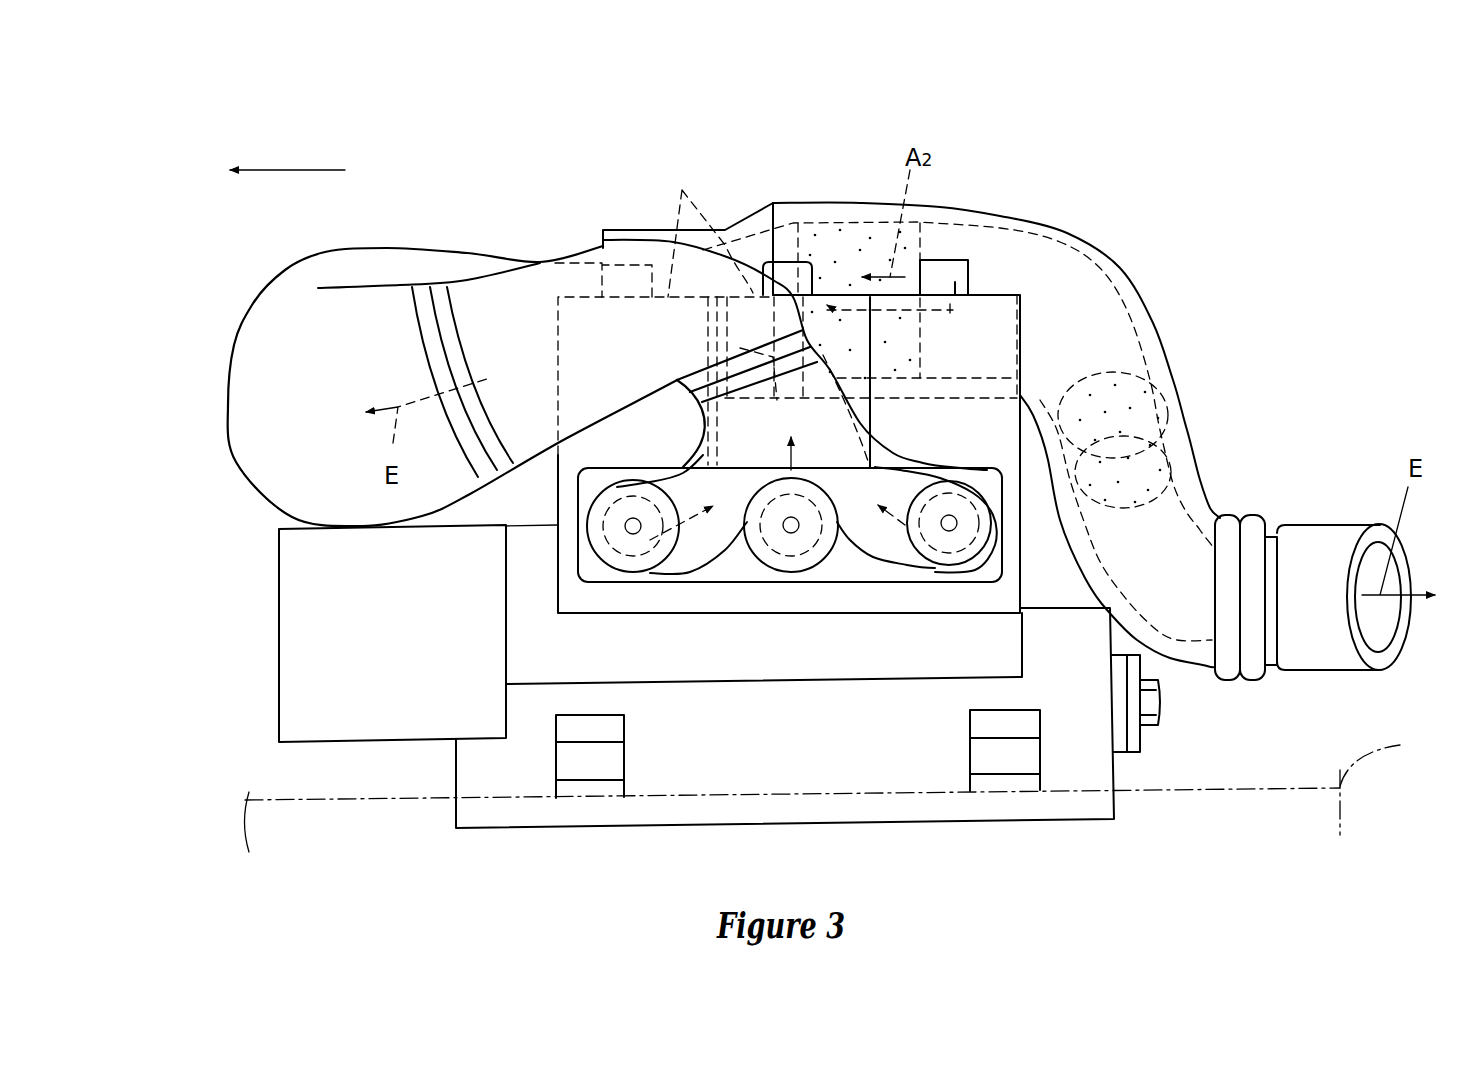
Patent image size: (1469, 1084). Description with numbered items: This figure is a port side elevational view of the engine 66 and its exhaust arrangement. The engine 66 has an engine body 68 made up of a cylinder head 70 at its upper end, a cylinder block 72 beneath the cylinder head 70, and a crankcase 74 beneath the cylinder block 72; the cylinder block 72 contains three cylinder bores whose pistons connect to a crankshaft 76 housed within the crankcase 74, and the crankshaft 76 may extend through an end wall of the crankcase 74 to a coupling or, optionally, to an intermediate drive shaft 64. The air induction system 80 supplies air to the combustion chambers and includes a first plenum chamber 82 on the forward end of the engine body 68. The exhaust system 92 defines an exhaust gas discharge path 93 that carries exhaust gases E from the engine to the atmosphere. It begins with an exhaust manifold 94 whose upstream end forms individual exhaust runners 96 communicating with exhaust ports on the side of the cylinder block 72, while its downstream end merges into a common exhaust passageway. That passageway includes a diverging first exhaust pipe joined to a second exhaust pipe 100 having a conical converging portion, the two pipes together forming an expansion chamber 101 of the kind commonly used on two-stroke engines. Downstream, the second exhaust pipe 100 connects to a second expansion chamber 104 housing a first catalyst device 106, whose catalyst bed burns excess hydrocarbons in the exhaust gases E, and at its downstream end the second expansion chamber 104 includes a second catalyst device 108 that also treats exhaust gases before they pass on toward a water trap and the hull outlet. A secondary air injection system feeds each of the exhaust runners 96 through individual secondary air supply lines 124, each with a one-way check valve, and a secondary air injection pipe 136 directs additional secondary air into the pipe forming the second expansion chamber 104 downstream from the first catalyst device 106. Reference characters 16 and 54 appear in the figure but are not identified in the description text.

The axis / surface 16 is at (838, 793).
The direction arrow 54 is at (291, 170).
The intermediate drive shaft 64 is at (1147, 707).
The engine 66 is at (1253, 242).
The engine body 68 is at (1005, 333).
The cylinder head 70 is at (997, 288).
The cylinder block 72 is at (749, 330).
The crankcase 74 is at (1090, 765).
The crankshaft 76 is at (915, 740).
The air induction system 80 is at (277, 622).
The first plenum chamber 82 is at (303, 688).
The exhaust system 92 is at (470, 226).
The exhaust gas discharge path 93 is at (282, 403).
The exhaust manifold 94 is at (663, 585).
The exhaust runners 96 is at (955, 525).
The second exhaust pipe 100 is at (247, 342).
The expansion chamber 101 is at (270, 452).
The second expansion chamber 104 is at (1113, 341).
The first catalyst device 106 is at (820, 222).
The second catalyst device 108 is at (1150, 422).
The secondary air supply lines 124 is at (632, 527).
The secondary air injection pipe 136 is at (848, 293).